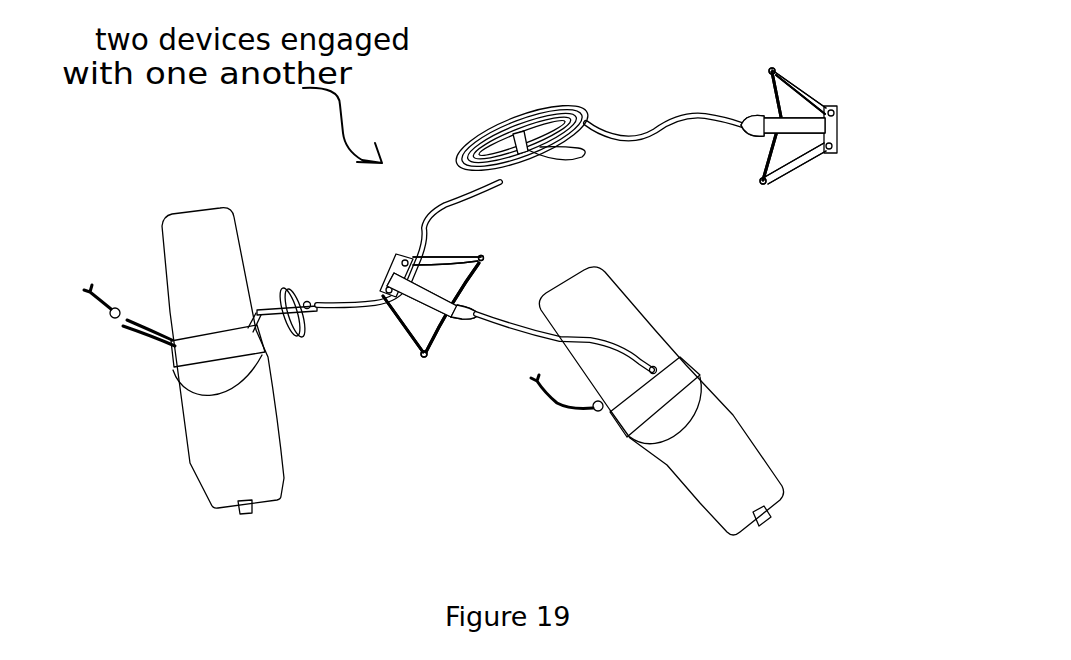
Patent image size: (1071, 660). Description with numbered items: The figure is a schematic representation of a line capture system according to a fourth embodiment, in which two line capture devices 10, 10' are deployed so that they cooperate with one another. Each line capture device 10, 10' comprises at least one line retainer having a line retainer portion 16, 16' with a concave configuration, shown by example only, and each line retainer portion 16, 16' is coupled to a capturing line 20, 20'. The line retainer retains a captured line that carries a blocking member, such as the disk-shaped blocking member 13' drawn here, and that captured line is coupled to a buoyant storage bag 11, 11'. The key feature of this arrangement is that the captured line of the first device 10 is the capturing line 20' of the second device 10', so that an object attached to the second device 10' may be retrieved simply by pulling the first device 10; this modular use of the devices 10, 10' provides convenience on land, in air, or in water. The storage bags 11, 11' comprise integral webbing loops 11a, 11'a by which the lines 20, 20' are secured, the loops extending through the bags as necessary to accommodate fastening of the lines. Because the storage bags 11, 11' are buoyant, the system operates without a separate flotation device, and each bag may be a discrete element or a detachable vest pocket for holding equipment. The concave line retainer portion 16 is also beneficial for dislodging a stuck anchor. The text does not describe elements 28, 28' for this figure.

The line capture device 10 is at (432, 354).
The line capture device 10' is at (795, 170).
The buoyant storage bag 11 is at (683, 401).
The buoyant storage bag 11' is at (184, 396).
The integral webbing loop 11a is at (767, 527).
The integral webbing loop 11'a is at (282, 545).
The blocking member 13' is at (307, 365).
The line retainer portion 16 is at (471, 283).
The line retainer portion 16' is at (811, 97).
The capturing line 20 is at (564, 384).
The capturing line 20' is at (529, 161).
The bar 28 is at (475, 291).
The bar 28' is at (735, 160).